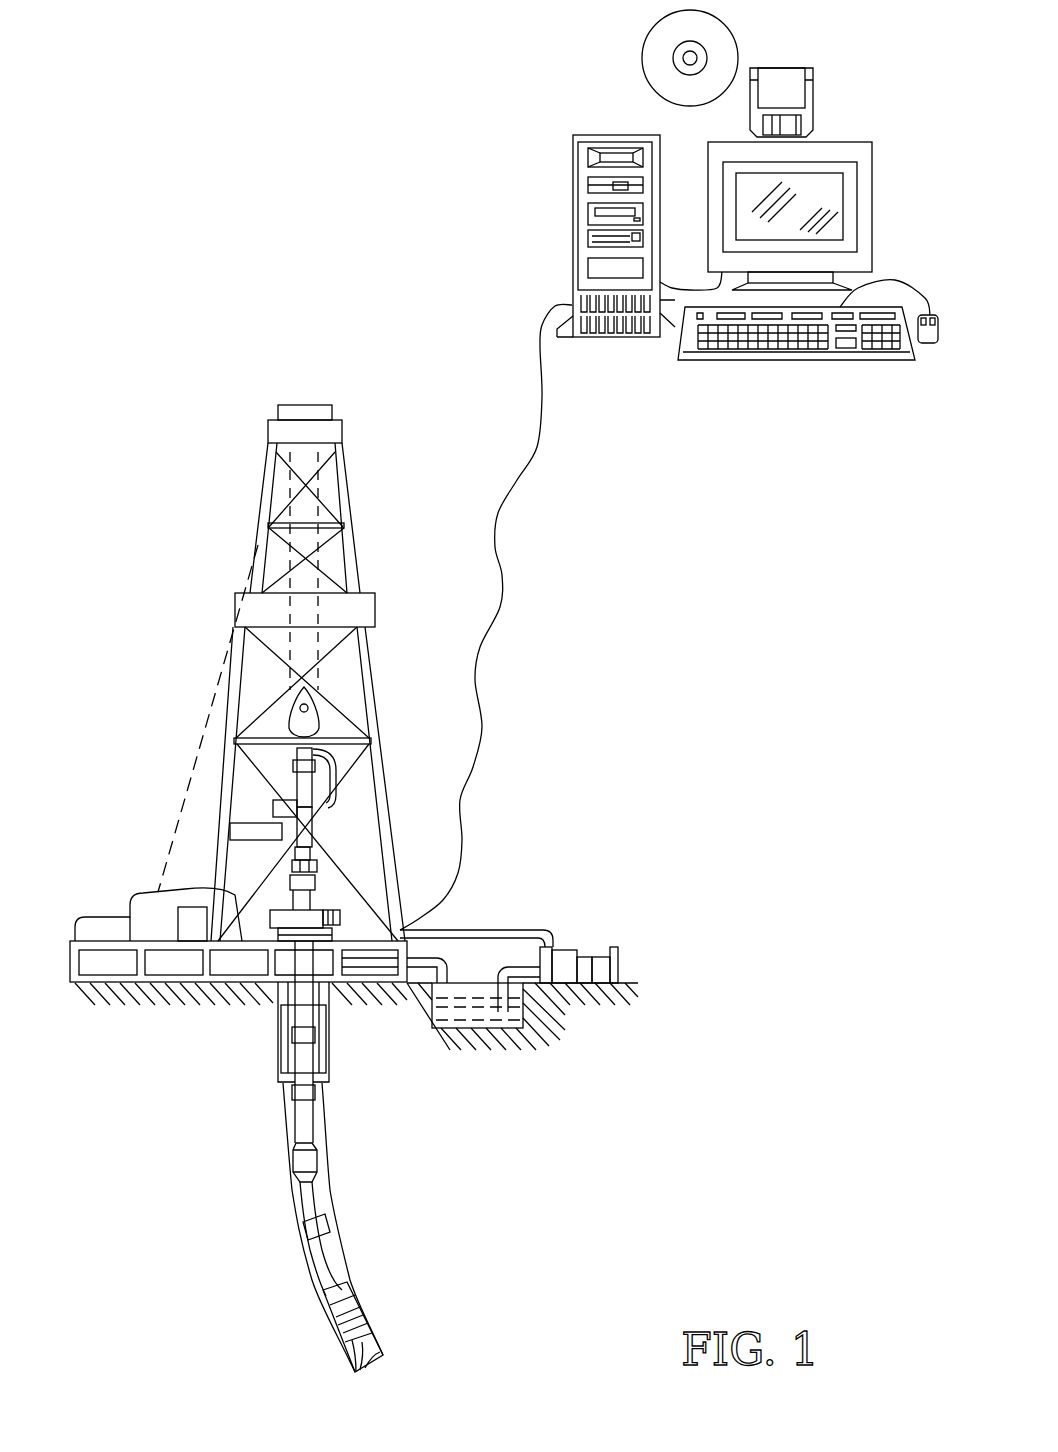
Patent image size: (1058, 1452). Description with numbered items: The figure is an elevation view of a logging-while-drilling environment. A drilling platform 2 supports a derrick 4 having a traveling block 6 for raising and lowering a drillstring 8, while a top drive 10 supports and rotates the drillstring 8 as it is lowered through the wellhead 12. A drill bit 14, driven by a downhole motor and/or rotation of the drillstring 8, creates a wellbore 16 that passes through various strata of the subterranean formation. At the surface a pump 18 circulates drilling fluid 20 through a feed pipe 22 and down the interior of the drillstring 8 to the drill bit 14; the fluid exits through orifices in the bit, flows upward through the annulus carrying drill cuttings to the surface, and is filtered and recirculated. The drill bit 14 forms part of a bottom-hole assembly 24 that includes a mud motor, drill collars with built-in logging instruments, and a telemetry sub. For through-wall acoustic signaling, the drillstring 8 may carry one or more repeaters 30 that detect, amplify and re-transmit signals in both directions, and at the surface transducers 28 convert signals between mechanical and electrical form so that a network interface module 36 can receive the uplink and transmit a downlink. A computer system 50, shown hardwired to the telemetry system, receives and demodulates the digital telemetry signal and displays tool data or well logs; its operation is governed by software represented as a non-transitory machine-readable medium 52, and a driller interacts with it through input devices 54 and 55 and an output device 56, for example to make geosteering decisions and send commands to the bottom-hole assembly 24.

The drilling platform 2 is at (70, 957).
The derrick 4 is at (357, 563).
The traveling block 6 is at (323, 698).
The drillstring 8 is at (305, 1123).
The top drive 10 is at (307, 782).
The wellhead 12 is at (338, 912).
The drill bit 14 is at (377, 1345).
The wellbore 16 is at (330, 1178).
The pump 18 is at (560, 958).
The drilling fluid 20 is at (457, 1015).
The feed pipe 22 is at (480, 930).
The bottom-hole assembly 24 is at (353, 1367).
The transducers 28 is at (315, 865).
The repeaters 30 is at (298, 1162).
The network interface module 36 is at (188, 912).
The computer system 50 is at (573, 233).
The non-transitory machine-readable medium 52 is at (738, 45).
The input device 54 is at (823, 360).
The input device 55 is at (937, 345).
The output device 56 is at (872, 196).